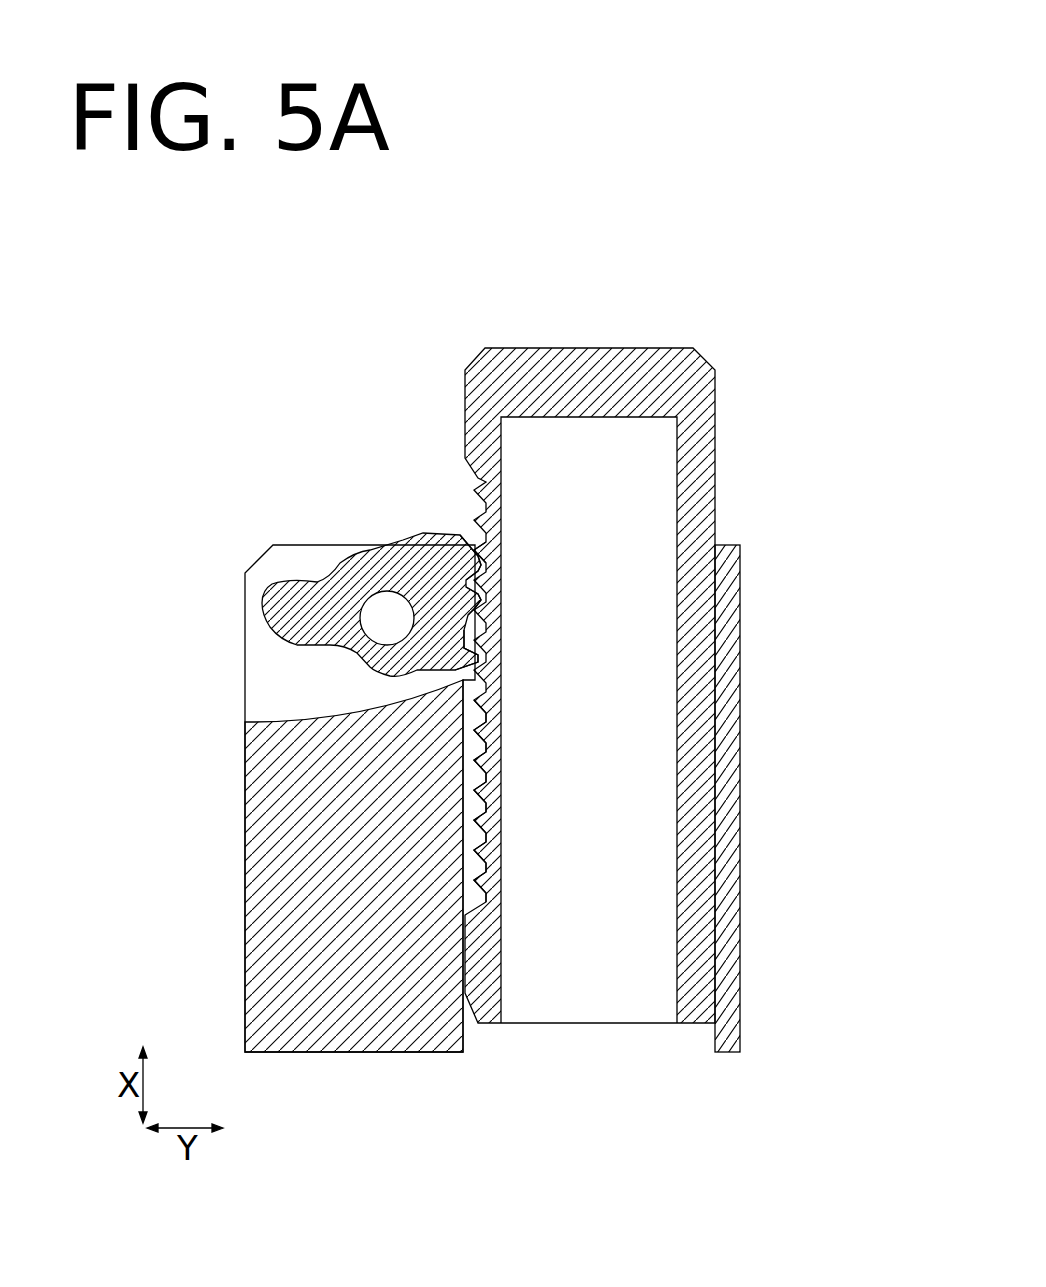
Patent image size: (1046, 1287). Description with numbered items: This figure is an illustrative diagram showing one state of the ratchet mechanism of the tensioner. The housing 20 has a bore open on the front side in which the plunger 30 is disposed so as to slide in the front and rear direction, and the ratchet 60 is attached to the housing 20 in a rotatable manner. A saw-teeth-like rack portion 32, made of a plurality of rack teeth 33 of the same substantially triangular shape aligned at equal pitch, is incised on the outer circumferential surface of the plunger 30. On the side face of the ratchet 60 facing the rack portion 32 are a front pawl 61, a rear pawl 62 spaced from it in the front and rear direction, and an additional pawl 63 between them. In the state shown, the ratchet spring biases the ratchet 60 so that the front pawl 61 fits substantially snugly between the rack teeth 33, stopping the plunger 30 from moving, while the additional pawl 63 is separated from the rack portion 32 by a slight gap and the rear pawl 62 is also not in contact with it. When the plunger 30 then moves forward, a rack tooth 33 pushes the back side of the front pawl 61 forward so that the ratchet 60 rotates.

The housing 20 is at (730, 632).
The plunger 30 is at (656, 385).
The rack portion 32 is at (435, 832).
The rack teeth 33 is at (480, 555).
The ratchet 60 is at (420, 487).
The front pawl 61 is at (479, 560).
The rear pawl 62 is at (470, 657).
The additional pawl 63 is at (480, 598).